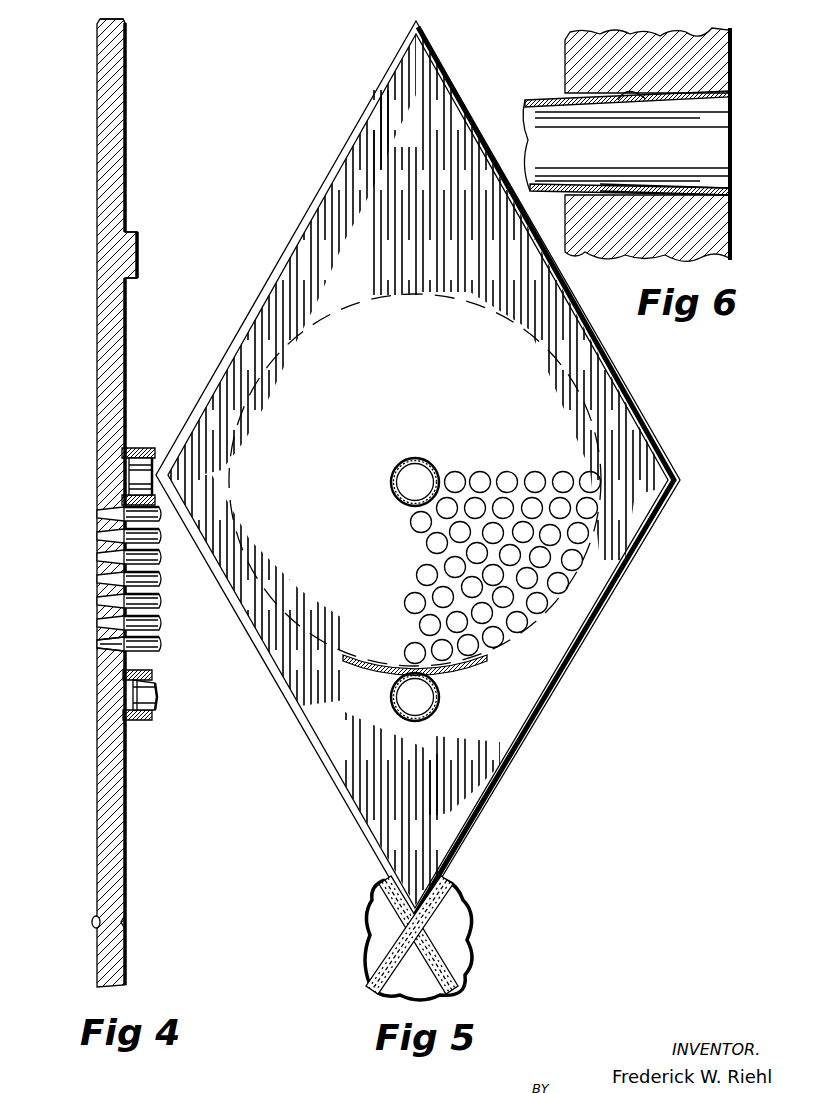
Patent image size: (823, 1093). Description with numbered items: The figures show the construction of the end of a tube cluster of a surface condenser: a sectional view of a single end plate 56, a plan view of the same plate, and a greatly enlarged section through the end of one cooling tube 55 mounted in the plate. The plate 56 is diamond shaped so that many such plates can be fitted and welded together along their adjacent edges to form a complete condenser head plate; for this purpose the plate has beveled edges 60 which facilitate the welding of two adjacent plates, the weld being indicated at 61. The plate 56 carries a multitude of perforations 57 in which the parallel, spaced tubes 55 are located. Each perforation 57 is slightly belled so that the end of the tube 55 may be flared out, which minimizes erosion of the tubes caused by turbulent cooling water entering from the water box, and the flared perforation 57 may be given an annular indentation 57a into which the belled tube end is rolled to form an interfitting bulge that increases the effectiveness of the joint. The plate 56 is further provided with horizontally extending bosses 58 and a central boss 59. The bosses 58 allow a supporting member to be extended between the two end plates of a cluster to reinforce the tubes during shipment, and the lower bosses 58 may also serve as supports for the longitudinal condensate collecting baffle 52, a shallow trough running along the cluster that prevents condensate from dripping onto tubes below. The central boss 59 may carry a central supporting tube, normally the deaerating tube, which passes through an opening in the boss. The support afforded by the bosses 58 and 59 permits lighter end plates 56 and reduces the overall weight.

In FIG. 5, the collecting baffle 52 is at (465, 667).
In FIG. 4, the tubes 55 is at (163, 622).
In FIG. 5, the tubes 55 is at (563, 480).
In FIG. 6, the tubes 55 is at (542, 100).
In FIG. 4, the end plate 56 is at (112, 745).
In FIG. 5, the end plate 56 is at (506, 773).
In FIG. 6, the end plate 56 is at (717, 70).
In FIG. 4, the perforations 57 is at (97, 645).
In FIG. 6, the perforations 57 is at (728, 185).
In FIG. 6, the annular indentations 57a is at (630, 95).
In FIG. 4, the bosses 58 is at (131, 258).
In FIG. 5, the bosses 58 is at (422, 705).
In FIG. 4, the central boss 59 is at (133, 453).
In FIG. 5, the central boss 59 is at (405, 489).
In FIG. 4, the beveled edges 60 is at (127, 22).
In FIG. 5, the beveled edges 60 is at (540, 715).
In FIG. 4, the weld 61 is at (92, 920).
In FIG. 5, the weld 61 is at (433, 905).